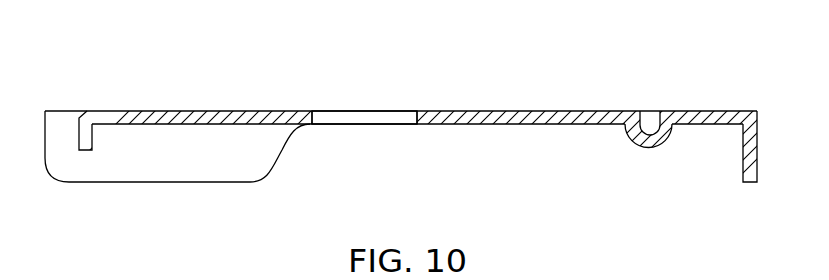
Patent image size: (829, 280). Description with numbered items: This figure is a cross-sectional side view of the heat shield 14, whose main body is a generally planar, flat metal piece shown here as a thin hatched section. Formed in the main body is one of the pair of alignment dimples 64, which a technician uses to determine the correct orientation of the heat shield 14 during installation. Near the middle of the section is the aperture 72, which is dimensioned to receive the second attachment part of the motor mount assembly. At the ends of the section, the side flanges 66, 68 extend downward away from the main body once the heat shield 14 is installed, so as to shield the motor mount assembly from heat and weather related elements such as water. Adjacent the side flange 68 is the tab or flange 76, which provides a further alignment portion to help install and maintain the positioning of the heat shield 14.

The heat shield 14 is at (157, 56).
The alignment dimples 64 is at (637, 143).
The side flange 66 is at (750, 157).
The side flange 68 is at (207, 155).
The aperture 72 is at (377, 118).
The tab or flange 76 is at (93, 137).